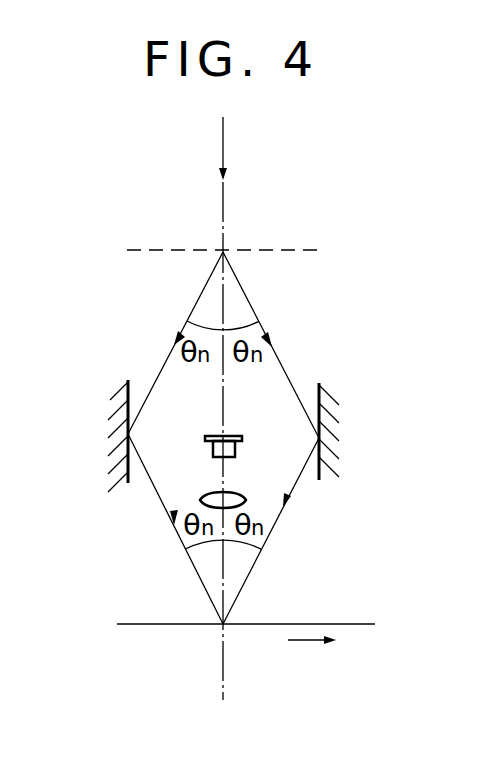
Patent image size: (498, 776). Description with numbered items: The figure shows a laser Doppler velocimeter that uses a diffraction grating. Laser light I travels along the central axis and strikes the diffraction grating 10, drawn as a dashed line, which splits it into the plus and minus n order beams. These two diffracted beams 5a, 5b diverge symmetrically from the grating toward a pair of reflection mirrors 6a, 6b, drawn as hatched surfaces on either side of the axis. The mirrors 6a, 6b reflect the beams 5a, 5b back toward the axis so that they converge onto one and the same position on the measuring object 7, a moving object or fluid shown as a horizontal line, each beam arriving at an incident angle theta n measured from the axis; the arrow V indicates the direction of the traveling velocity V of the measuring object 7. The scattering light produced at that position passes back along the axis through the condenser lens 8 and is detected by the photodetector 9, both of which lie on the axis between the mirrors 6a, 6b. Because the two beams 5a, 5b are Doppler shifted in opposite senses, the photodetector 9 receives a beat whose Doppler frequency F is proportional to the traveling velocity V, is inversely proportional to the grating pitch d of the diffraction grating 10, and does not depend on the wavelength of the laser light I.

The laser light I is at (228, 149).
The diffraction grating 10 is at (316, 250).
The split beam 5a is at (191, 312).
The split beam 5b is at (253, 310).
The reflection mirror 6a is at (108, 394).
The reflection mirror 6b is at (340, 393).
The measuring object 7 is at (133, 624).
The condenser lens 8 is at (200, 503).
The photodetector 9 is at (222, 428).
The traveling velocity V is at (317, 653).